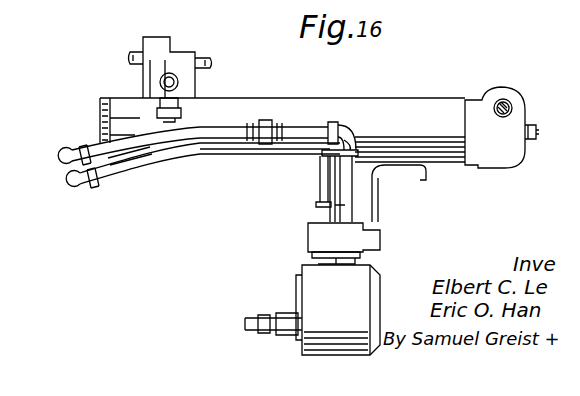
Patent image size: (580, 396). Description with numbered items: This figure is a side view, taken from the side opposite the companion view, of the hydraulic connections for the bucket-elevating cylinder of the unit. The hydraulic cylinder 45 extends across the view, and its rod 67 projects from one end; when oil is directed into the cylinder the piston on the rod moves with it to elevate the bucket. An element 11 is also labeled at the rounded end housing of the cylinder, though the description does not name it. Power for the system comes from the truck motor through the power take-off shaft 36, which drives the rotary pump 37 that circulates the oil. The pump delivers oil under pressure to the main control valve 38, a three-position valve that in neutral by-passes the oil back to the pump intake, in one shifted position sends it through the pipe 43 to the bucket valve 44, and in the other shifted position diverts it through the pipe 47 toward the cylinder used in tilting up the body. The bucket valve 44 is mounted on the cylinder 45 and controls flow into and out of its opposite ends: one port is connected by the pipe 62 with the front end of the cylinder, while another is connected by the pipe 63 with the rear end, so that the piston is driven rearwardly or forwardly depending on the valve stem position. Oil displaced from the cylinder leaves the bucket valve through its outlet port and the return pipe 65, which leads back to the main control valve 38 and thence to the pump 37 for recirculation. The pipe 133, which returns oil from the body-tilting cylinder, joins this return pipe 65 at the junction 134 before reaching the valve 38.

The ring 11 is at (503, 99).
The power take-off shaft 36 is at (264, 318).
The rotary pump 37 is at (312, 278).
The main control valve 38 is at (355, 240).
The pipe 43 is at (206, 152).
The bucket valve 44 is at (182, 57).
The hydraulic cylinder 45 is at (305, 100).
The pipe 47 is at (72, 153).
The pipe 62 is at (135, 54).
The pipe 63 is at (208, 58).
The return pipe 65 is at (333, 204).
The rod 67 is at (535, 139).
The pipe 133 is at (111, 161).
The junction 134 is at (354, 145).